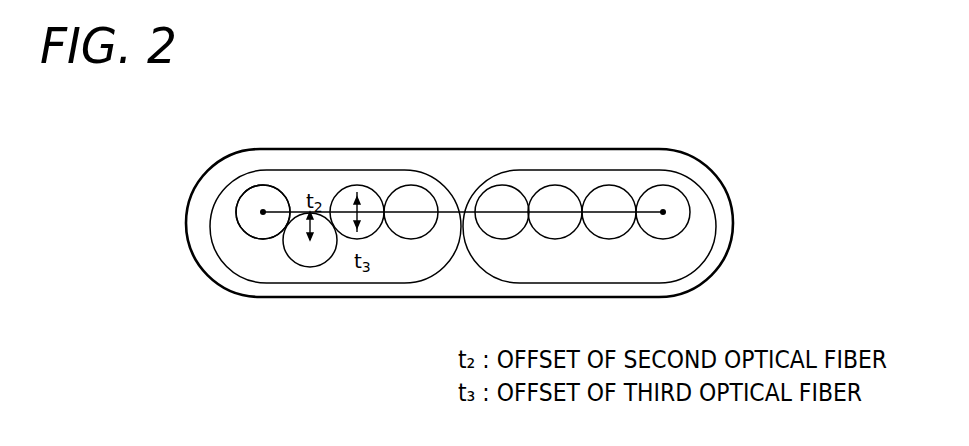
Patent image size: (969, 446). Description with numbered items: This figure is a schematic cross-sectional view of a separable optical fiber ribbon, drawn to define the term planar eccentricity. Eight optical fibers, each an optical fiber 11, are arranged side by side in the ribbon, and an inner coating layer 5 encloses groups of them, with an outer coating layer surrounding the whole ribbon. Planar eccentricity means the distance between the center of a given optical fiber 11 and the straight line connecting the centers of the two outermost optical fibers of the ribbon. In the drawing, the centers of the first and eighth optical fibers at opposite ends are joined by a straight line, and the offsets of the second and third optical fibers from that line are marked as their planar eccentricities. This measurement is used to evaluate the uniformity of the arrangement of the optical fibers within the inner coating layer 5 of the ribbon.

The optical fiber 11 is at (270, 198).
The inner coating layer 5 is at (387, 181).